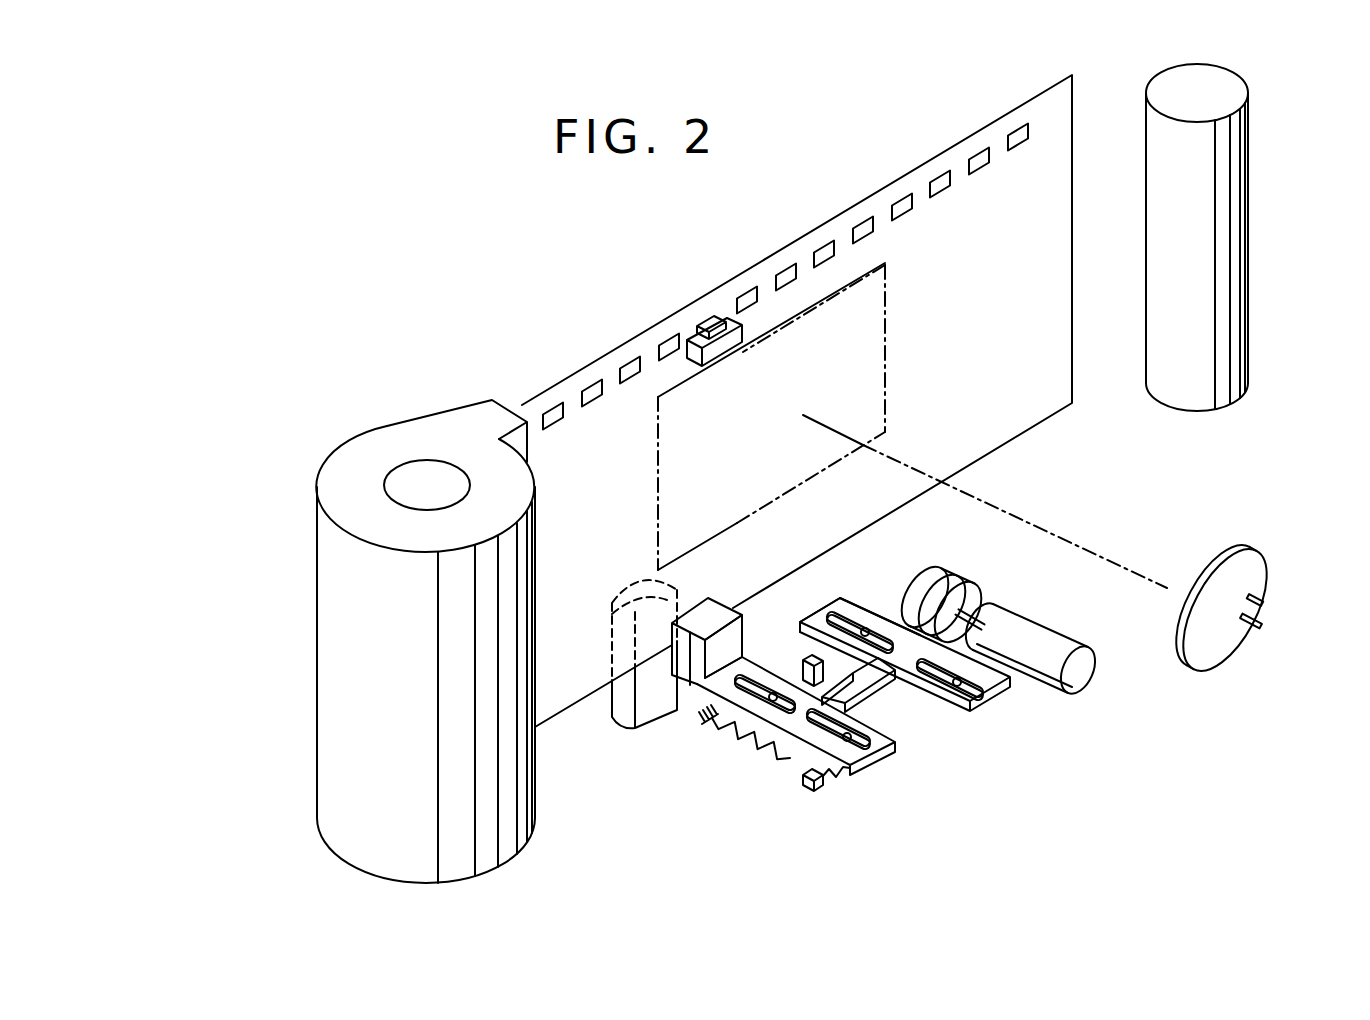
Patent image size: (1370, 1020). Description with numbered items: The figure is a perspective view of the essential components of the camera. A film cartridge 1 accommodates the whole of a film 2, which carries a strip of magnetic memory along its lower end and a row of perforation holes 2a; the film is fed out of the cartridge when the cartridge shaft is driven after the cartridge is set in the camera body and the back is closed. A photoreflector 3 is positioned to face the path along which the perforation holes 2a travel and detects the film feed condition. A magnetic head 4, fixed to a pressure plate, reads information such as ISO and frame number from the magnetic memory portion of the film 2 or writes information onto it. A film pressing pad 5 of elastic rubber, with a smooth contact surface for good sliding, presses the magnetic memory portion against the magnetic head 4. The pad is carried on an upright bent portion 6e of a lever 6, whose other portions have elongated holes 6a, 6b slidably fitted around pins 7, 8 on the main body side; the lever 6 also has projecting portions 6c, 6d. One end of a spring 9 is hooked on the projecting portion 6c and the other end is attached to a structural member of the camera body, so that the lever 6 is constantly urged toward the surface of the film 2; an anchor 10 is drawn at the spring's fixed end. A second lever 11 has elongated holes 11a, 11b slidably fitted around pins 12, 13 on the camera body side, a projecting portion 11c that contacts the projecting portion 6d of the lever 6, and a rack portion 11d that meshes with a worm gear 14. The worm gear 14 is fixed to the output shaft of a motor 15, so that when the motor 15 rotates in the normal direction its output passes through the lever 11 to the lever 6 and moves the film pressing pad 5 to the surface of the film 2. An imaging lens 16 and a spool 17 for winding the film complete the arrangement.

The film cartridge 1 is at (330, 643).
The film 2 is at (1060, 152).
The perforation holes 2a is at (975, 158).
The photoreflector 3 is at (722, 322).
The magnetic head 4 is at (612, 708).
The film pressing pad 5 is at (680, 667).
The lever 6 is at (830, 705).
The elongated hole 6a is at (752, 676).
The elongated hole 6b is at (878, 725).
The projecting portion 6c is at (828, 790).
The projecting portion 6d is at (836, 672).
The upright bent portion 6e is at (733, 637).
The pin 7 is at (773, 702).
The pin 8 is at (842, 777).
The spring 9 is at (738, 733).
The anchor pin 10 is at (687, 717).
The lever 11 is at (918, 629).
The elongated hole 11a is at (848, 612).
The elongated hole 11b is at (935, 676).
The projecting portion 11c is at (800, 622).
The rack portion 11d is at (912, 610).
The pin 12 is at (864, 626).
The pin 13 is at (960, 686).
The worm gear 14 is at (937, 582).
The motor 15 is at (1032, 625).
The imaging lens 16 is at (1257, 578).
The spool 17 is at (1232, 158).